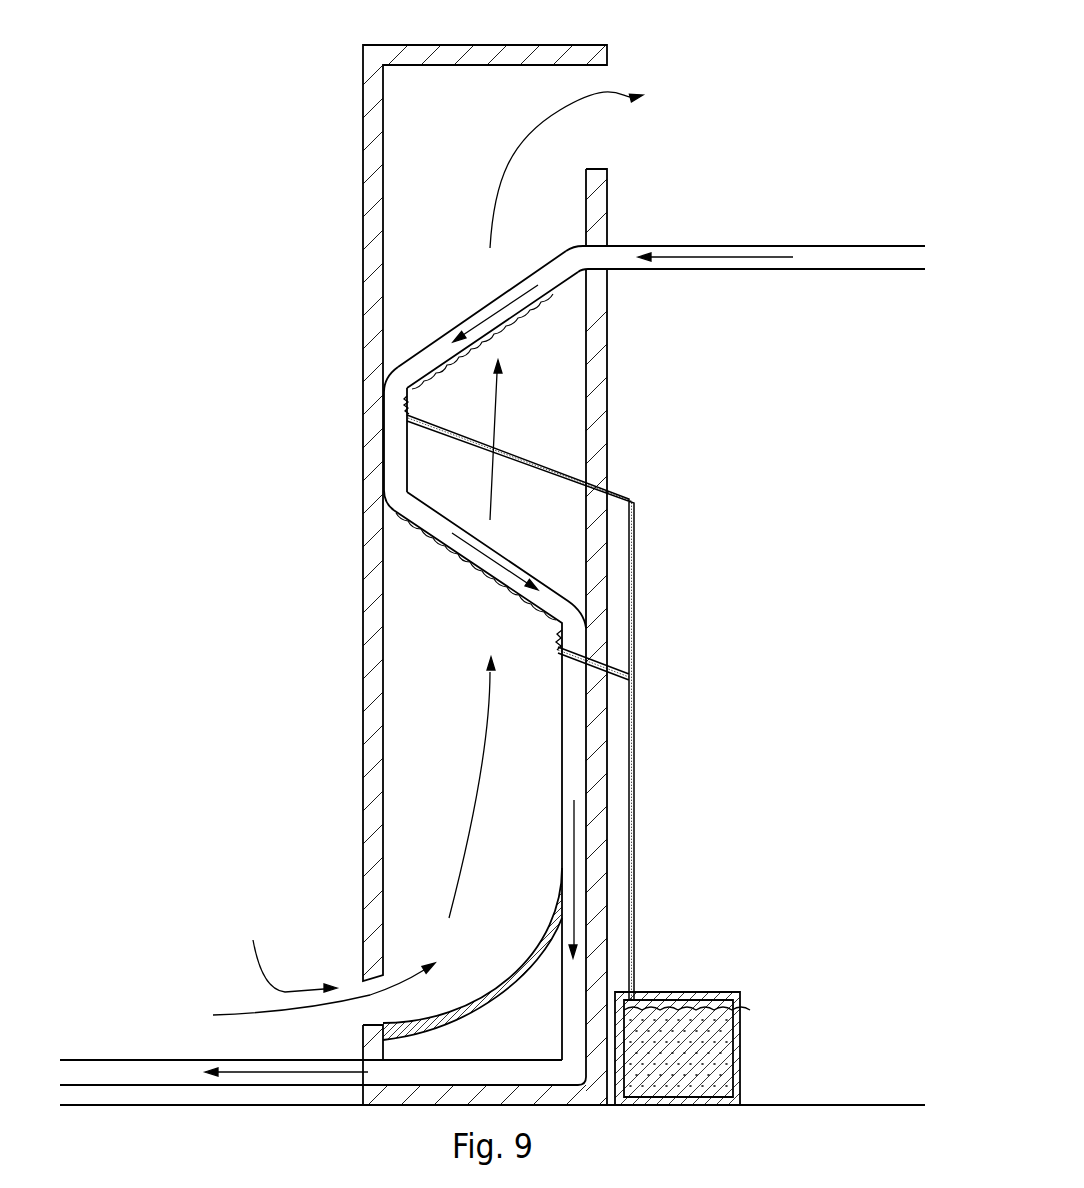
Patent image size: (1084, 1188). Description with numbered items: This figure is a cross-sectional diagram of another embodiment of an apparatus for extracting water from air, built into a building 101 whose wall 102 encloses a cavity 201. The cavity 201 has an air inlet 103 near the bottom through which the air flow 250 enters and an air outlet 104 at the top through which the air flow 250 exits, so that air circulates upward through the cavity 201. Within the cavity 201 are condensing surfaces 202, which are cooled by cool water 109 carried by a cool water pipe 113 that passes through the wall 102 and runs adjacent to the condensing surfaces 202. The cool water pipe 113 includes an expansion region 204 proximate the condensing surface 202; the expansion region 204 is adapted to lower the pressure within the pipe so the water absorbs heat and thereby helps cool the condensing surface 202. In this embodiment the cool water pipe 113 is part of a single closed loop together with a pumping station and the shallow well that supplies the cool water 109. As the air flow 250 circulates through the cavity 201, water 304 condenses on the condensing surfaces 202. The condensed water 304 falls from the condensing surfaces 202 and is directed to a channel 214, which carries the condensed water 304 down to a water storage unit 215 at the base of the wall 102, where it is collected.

The building 101 is at (821, 54).
The wall 102 is at (372, 465).
The air inlet 103 is at (324, 962).
The air outlet 104 is at (652, 64).
The cool water 109 is at (716, 258).
The cool water pipe 113 is at (835, 258).
The cavity 201 is at (405, 603).
The condensing surface 202 is at (553, 292).
The expansion region 204 is at (413, 370).
The channel 214 is at (636, 538).
The water storage unit 215 is at (701, 997).
The air flow 250 is at (482, 748).
The condensed water 304 is at (468, 349).